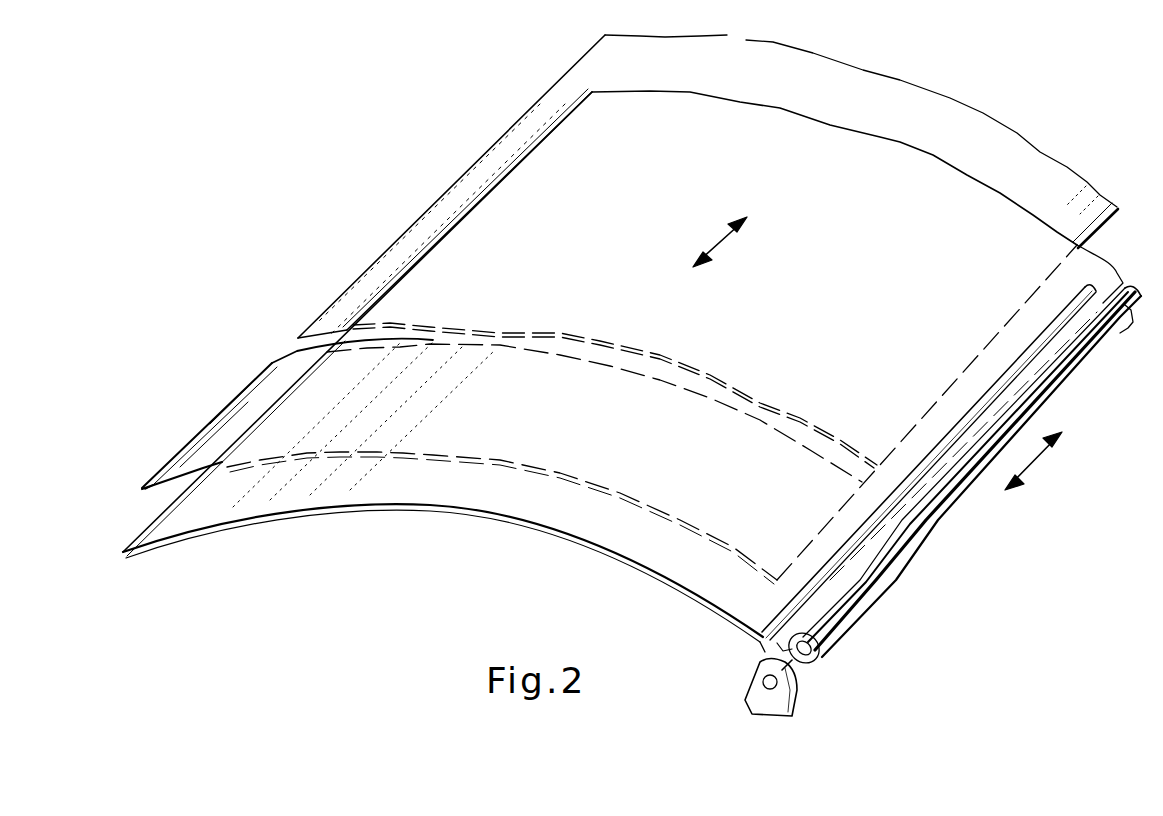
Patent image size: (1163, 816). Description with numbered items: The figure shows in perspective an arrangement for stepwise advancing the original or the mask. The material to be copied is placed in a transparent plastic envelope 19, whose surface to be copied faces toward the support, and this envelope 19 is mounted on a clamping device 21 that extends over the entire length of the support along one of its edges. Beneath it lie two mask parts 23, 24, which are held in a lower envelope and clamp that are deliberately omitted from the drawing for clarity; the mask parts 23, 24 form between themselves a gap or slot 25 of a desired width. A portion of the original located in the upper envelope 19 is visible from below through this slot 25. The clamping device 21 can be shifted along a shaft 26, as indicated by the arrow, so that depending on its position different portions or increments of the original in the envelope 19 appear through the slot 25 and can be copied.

The transparent plastic envelope 19 is at (430, 493).
The clamping device 21 is at (882, 580).
The mask part 23 is at (225, 428).
The mask part 24 is at (453, 206).
The gap or slot 25 is at (305, 350).
The shaft 26 is at (1107, 325).